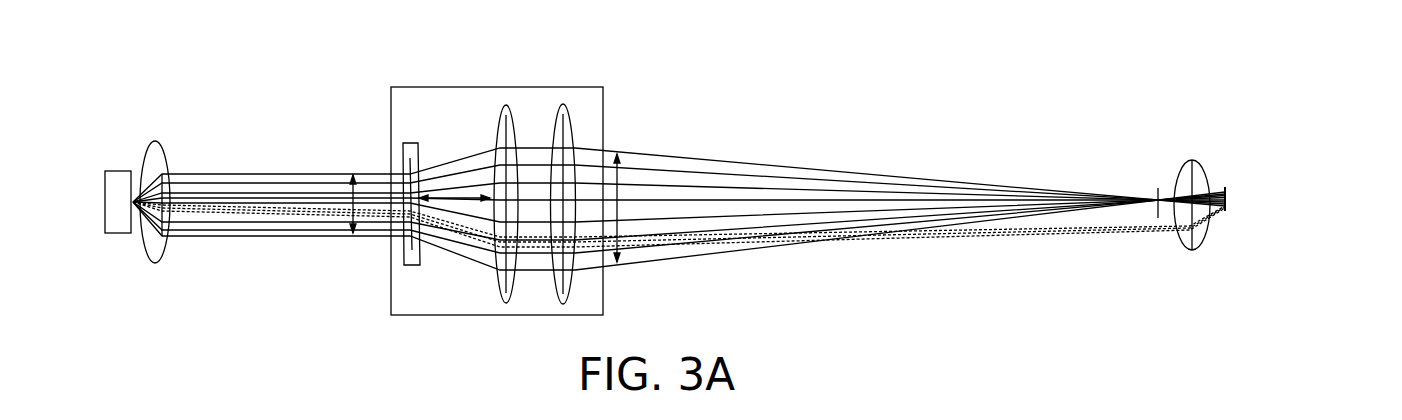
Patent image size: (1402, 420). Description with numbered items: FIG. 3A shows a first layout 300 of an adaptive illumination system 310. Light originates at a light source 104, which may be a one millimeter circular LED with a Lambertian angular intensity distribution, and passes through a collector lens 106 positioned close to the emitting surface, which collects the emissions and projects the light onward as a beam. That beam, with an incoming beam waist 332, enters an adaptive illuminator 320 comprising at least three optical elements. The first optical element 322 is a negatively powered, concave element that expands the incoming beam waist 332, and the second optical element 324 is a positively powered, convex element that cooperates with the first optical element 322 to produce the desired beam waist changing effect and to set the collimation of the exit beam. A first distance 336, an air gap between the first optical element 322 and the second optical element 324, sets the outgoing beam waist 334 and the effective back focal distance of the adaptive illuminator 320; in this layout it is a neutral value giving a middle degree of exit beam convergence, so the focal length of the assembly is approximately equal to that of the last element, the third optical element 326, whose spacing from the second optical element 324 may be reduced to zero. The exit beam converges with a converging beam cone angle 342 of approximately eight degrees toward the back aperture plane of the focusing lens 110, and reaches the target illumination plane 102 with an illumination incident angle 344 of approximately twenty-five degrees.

The target illumination plane 102 is at (1227, 189).
The light source 104 is at (105, 171).
The collector lens 106 is at (153, 142).
The focusing lens 110 is at (1190, 162).
The first layout 300 is at (1318, 43).
The adaptive illumination system 310 is at (1133, 43).
The adaptive illuminator 320 is at (607, 84).
The first optical element 322 is at (404, 142).
The second optical element 324 is at (503, 105).
The third optical element 326 is at (560, 105).
The incoming beam waist 332 is at (353, 175).
The outgoing beam waist 334 is at (618, 154).
The first distance 336 is at (473, 197).
The converging beam cone angle 342 is at (1137, 185).
The illumination incident angle 344 is at (1221, 220).